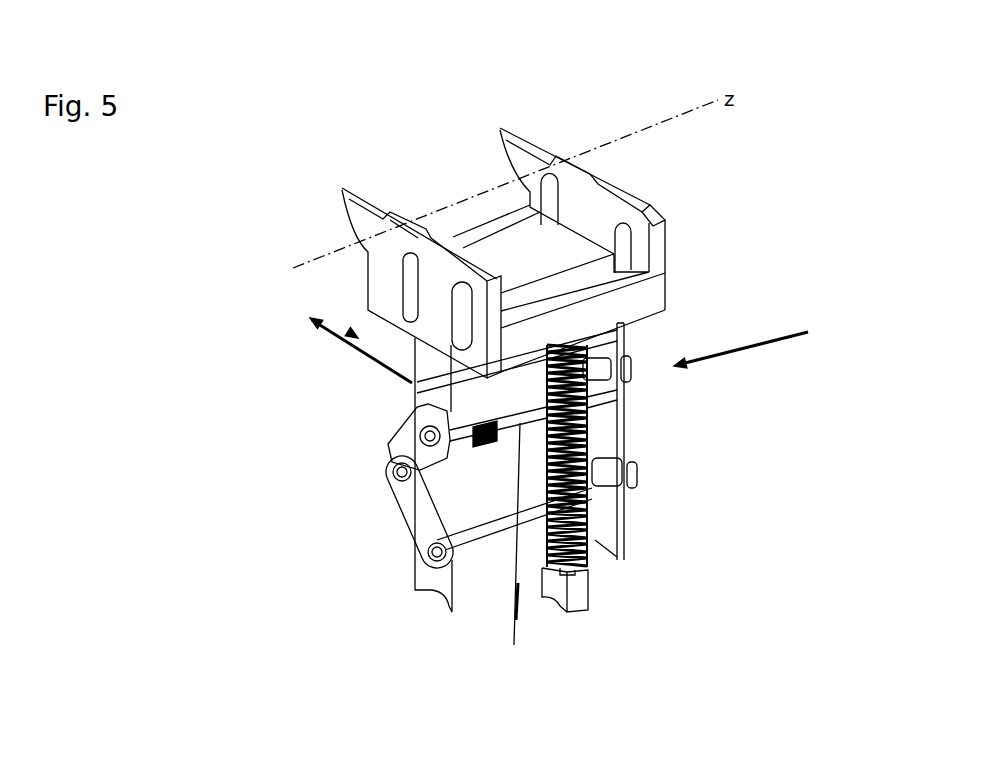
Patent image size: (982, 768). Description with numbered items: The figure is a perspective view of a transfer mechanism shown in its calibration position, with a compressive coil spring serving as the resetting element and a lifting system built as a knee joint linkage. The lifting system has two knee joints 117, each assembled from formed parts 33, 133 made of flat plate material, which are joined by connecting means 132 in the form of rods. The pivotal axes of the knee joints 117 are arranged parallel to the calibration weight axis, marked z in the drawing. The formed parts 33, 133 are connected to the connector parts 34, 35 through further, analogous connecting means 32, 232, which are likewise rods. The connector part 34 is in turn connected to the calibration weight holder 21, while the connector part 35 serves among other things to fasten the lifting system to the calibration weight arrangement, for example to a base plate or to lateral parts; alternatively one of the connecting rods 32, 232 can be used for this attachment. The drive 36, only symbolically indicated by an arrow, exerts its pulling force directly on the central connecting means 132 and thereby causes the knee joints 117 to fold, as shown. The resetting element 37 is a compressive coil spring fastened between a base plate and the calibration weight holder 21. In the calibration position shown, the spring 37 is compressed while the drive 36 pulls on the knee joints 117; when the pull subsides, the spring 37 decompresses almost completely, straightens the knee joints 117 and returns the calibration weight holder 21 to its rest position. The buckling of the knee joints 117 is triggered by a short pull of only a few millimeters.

The calibration weight holder 21 is at (593, 205).
The connecting means 232 is at (593, 330).
The drive 36 is at (323, 337).
The connector part 34 is at (433, 393).
The formed part 133 is at (387, 451).
The formed part 33 is at (420, 510).
The connector part 35 is at (428, 588).
The connecting means 32 is at (473, 540).
The connecting means 132 is at (512, 552).
The resetting element 37 is at (590, 577).
The knee joint 117 is at (774, 340).